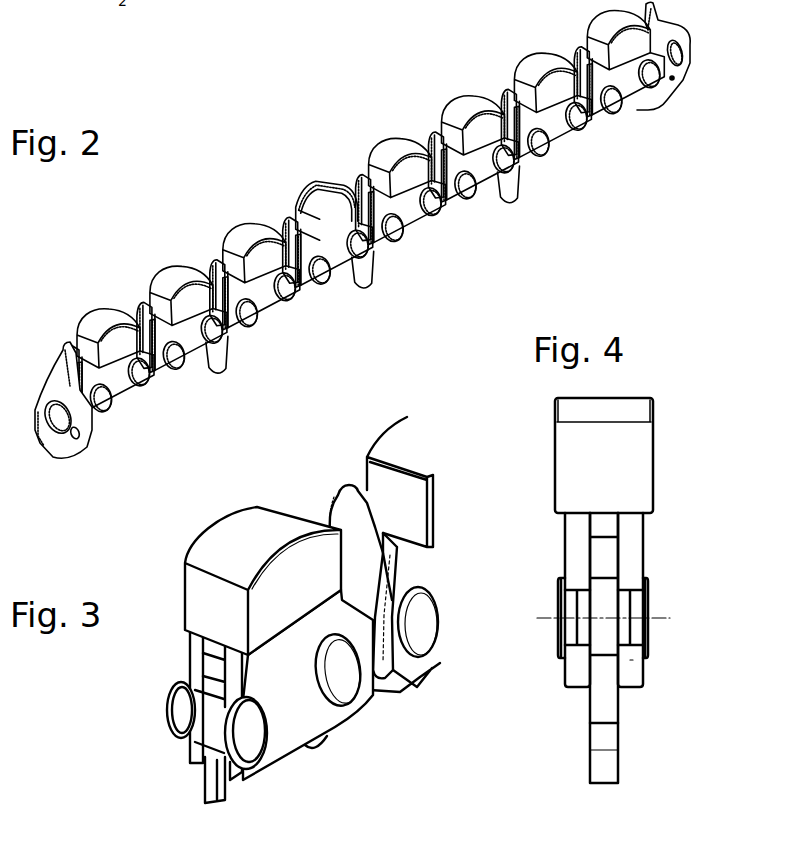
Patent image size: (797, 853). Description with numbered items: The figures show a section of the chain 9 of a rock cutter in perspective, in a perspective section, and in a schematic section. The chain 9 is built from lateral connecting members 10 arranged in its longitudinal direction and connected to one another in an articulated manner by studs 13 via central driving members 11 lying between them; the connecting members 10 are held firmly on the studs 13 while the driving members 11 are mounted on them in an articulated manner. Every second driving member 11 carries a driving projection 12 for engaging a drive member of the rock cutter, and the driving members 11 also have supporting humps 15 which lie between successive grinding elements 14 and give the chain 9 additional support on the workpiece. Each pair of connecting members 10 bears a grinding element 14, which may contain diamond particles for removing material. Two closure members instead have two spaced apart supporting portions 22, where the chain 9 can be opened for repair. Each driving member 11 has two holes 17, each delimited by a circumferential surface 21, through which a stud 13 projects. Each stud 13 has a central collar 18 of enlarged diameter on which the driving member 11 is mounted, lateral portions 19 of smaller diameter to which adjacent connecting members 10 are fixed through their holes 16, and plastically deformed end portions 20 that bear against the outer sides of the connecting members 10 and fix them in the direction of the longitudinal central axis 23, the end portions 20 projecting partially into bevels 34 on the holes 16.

In FIG. 2, the chain 9 is at (254, 194).
In FIG. 2, the connecting member 10 is at (337, 268).
In FIG. 3, the connecting member 10 is at (302, 710).
In FIG. 4, the connecting member 10 is at (572, 553).
In FIG. 2, the driving member 11 is at (367, 212).
In FIG. 2, the driving projection 12 is at (218, 372).
In FIG. 3, the driving projection 12 is at (210, 785).
In FIG. 4, the driving projection 12 is at (608, 760).
In FIG. 2, the stud 13 is at (162, 380).
In FIG. 3, the stud 13 is at (237, 735).
In FIG. 4, the stud 13 is at (664, 594).
In FIG. 2, the grinding element 14 is at (103, 313).
In FIG. 3, the grinding element 14 is at (241, 525).
In FIG. 4, the grinding element 14 is at (571, 447).
In FIG. 2, the supporting hump 15 is at (510, 103).
In FIG. 3, the supporting hump 15 is at (349, 488).
In FIG. 3, the hole 16 is at (166, 708).
In FIG. 2, the hole 17 is at (53, 404).
In FIG. 3, the hole 17 is at (201, 680).
In FIG. 3, the collar 18 is at (193, 735).
In FIG. 4, the collar 18 is at (605, 648).
In FIG. 4, the lateral portion 19 is at (575, 633).
In FIG. 4, the end portion 20 is at (648, 628).
In FIG. 2, the circumferential surface 21 is at (84, 432).
In FIG. 2, the supporting portion 22 is at (339, 203).
In FIG. 4, the longitudinal central axis 23 is at (550, 620).
In FIG. 4, the bevel 34 is at (637, 660).